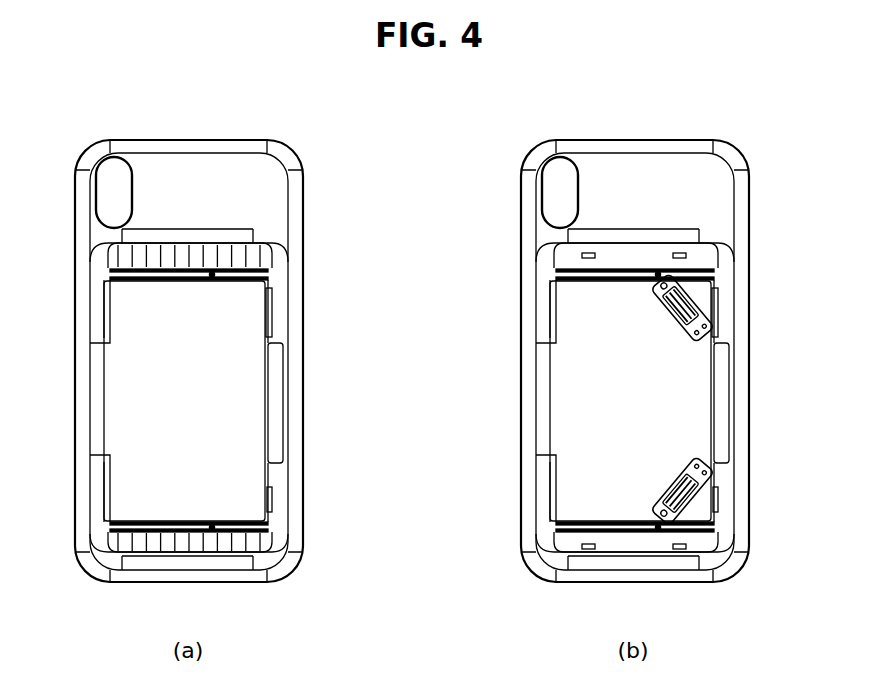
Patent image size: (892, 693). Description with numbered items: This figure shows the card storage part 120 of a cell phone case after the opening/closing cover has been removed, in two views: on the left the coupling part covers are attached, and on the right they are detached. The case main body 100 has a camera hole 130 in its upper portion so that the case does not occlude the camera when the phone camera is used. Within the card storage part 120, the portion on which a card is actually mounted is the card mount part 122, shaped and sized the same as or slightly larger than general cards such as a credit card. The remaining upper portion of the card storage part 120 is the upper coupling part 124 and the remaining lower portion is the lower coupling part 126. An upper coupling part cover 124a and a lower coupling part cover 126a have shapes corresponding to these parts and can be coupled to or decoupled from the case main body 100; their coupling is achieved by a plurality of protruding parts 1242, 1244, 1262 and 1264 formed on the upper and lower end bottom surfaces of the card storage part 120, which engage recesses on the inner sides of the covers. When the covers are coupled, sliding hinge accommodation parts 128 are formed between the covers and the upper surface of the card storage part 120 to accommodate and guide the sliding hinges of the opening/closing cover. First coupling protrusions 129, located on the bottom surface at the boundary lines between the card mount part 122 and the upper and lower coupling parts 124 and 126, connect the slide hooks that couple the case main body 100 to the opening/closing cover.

The case main body 100 is at (238, 148).
The camera hole 130 is at (117, 170).
The card storage part 120 is at (803, 295).
The card mount part 122 is at (247, 382).
The upper coupling part 124 is at (703, 309).
The upper coupling part cover 124a is at (234, 263).
The lower coupling part 126 is at (698, 541).
The lower coupling part cover 126a is at (254, 547).
The sliding hinge accommodation part 128 is at (168, 264).
The first coupling protrusion 129 is at (215, 528).
The protruding part 1242 is at (588, 250).
The protruding part 1244 is at (680, 250).
The protruding part 1262 is at (588, 552).
The protruding part 1264 is at (680, 552).